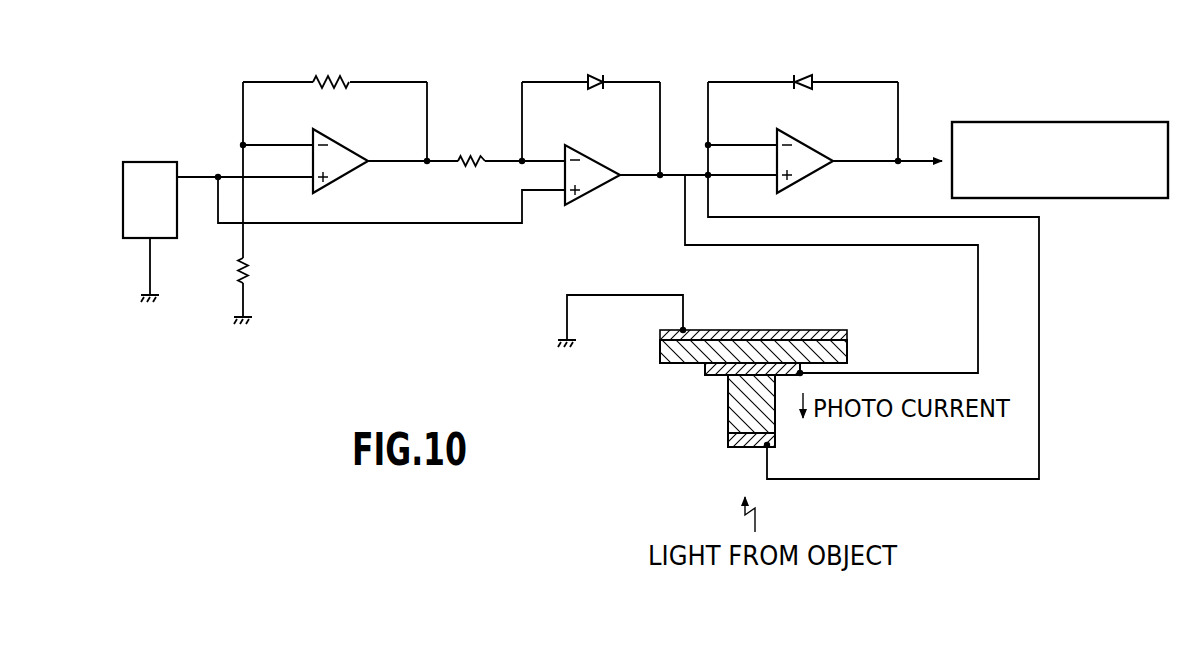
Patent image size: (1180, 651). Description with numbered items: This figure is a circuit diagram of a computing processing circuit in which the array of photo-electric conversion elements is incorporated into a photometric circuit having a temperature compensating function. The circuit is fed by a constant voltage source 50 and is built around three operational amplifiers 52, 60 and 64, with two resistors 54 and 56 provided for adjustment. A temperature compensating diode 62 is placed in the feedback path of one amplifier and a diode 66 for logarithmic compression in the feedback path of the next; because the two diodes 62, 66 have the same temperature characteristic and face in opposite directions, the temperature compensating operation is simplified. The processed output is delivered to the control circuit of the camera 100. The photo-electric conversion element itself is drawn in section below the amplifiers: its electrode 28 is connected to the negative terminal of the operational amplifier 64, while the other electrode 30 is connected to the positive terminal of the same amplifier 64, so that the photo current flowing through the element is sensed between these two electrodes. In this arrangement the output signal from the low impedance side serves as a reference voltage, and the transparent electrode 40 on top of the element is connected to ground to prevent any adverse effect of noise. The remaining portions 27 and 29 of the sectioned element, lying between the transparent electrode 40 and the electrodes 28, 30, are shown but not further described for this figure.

The constant voltage source 50 is at (145, 160).
The operational amplifier 52 is at (345, 148).
The resistor 54 is at (333, 76).
The resistor 56 is at (251, 270).
The operational amplifier 60 is at (592, 160).
The temperature compensating diode 62 is at (598, 75).
The operational amplifier 64 is at (812, 150).
The diode for logarithmic compression 66 is at (803, 74).
The control circuit of camera 100 is at (1025, 120).
The transparent electrode 40 is at (838, 330).
The photoconductive layer 27 is at (845, 356).
The electrode 28 is at (705, 368).
The semiconductor layer 29 is at (730, 408).
The electrode 30 is at (770, 445).